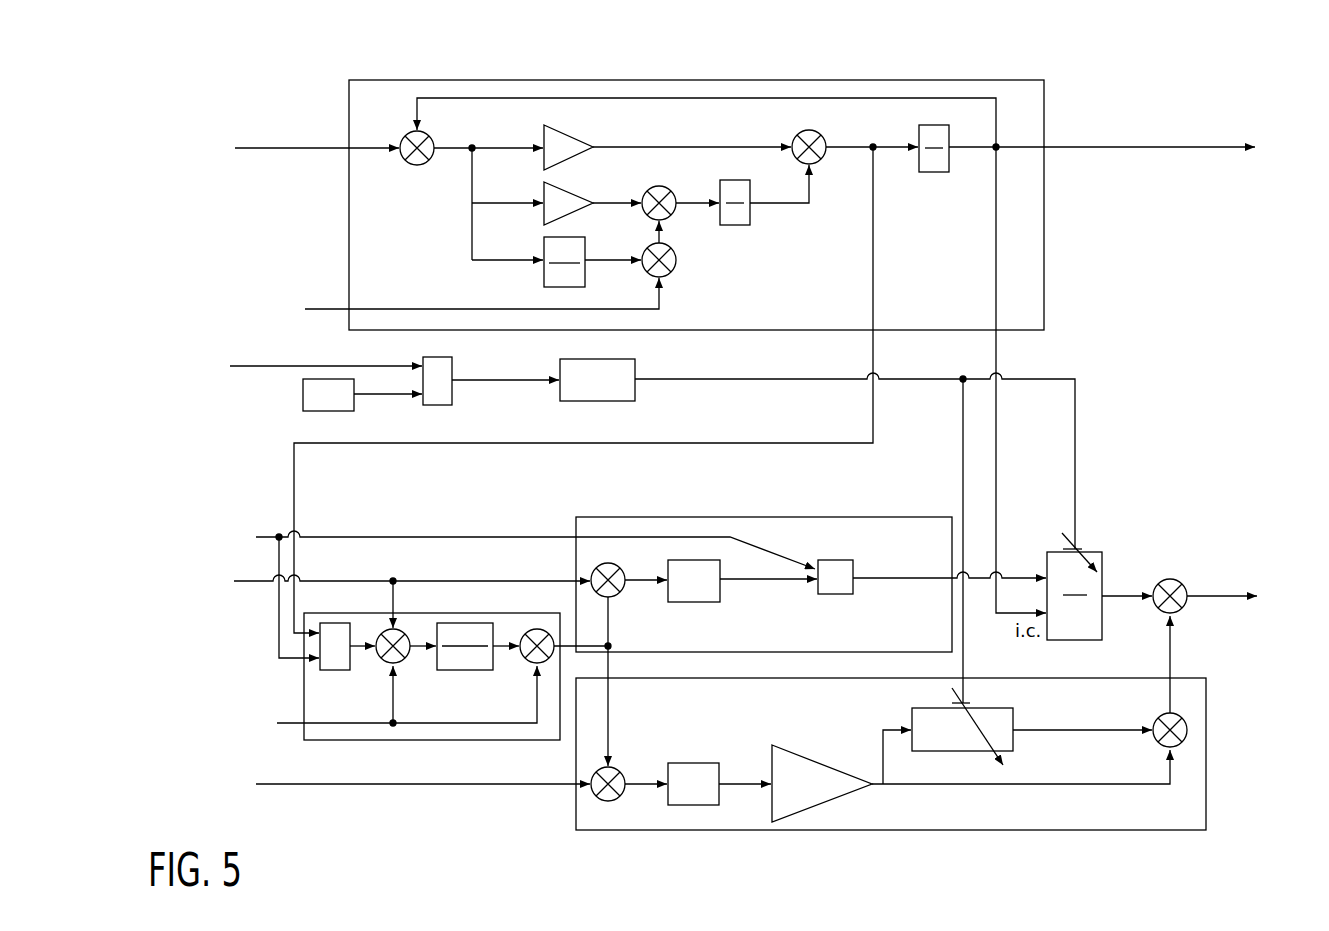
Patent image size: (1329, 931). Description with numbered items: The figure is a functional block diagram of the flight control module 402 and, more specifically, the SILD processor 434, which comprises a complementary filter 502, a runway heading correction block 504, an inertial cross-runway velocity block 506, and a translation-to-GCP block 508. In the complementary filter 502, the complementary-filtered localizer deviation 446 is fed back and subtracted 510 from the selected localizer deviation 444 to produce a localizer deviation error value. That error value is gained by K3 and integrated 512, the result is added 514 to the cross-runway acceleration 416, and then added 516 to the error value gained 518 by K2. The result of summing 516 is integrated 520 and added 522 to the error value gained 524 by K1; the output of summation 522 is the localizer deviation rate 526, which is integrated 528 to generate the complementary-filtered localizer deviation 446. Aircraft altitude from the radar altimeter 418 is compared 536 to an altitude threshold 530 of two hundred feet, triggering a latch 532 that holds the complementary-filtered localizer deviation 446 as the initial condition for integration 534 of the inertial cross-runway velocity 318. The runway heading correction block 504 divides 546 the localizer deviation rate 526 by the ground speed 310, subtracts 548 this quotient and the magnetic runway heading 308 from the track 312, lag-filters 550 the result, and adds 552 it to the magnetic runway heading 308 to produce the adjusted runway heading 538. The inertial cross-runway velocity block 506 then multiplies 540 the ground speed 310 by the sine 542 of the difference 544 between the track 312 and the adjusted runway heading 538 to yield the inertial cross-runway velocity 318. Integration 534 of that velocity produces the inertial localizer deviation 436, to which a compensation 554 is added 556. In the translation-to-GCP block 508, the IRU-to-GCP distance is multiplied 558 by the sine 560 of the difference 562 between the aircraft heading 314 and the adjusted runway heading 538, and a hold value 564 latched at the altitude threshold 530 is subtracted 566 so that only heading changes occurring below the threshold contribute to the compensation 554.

The flight control module 402 is at (218, 47).
The SILD processor 434 is at (195, 95).
The selected localizer deviation 444 is at (236, 150).
The complementary-filtered localizer deviation 446 is at (1237, 147).
The complementary filter 502 is at (392, 87).
The runway heading correction block 504 is at (432, 740).
The inertial cross-runway velocity block 506 is at (697, 518).
The translation-to-GCP block 508 is at (637, 830).
The subtraction 510 is at (414, 168).
The integration 512 is at (585, 237).
The addition 514 is at (671, 273).
The addition 516 is at (670, 190).
The gain K2 518 is at (575, 190).
The integration 520 is at (734, 226).
The addition 522 is at (818, 133).
The gain K1 524 is at (575, 135).
The localizer deviation rate 526 is at (873, 443).
The integration 528 is at (933, 173).
The altitude threshold 530 is at (303, 394).
The latch 532 is at (635, 370).
The integration 534 is at (1102, 560).
The comparison 536 is at (452, 367).
The adjusted runway heading 538 is at (610, 662).
The multiplication 540 is at (853, 565).
The sine 542 is at (695, 602).
The difference 544 is at (596, 567).
The division 546 is at (335, 670).
The subtraction 548 is at (405, 634).
The lag filter 550 is at (460, 670).
The addition 552 is at (526, 634).
The compensation 554 is at (1170, 642).
The addition 556 is at (1176, 580).
The multiplication 558 is at (811, 760).
The sine 560 is at (695, 763).
The difference 562 is at (597, 797).
The hold value 564 is at (1013, 715).
The subtraction 566 is at (1156, 740).
The magnetic runway heading 308 is at (290, 723).
The ground speed 310 is at (256, 537).
The track 312 is at (234, 581).
The aircraft heading 314 is at (266, 784).
The inertial cross-runway velocity 318 is at (920, 579).
The cross-runway acceleration 416 is at (305, 309).
The radar altimeter 418 is at (246, 366).
The inertial localizer deviation 436 is at (1240, 596).